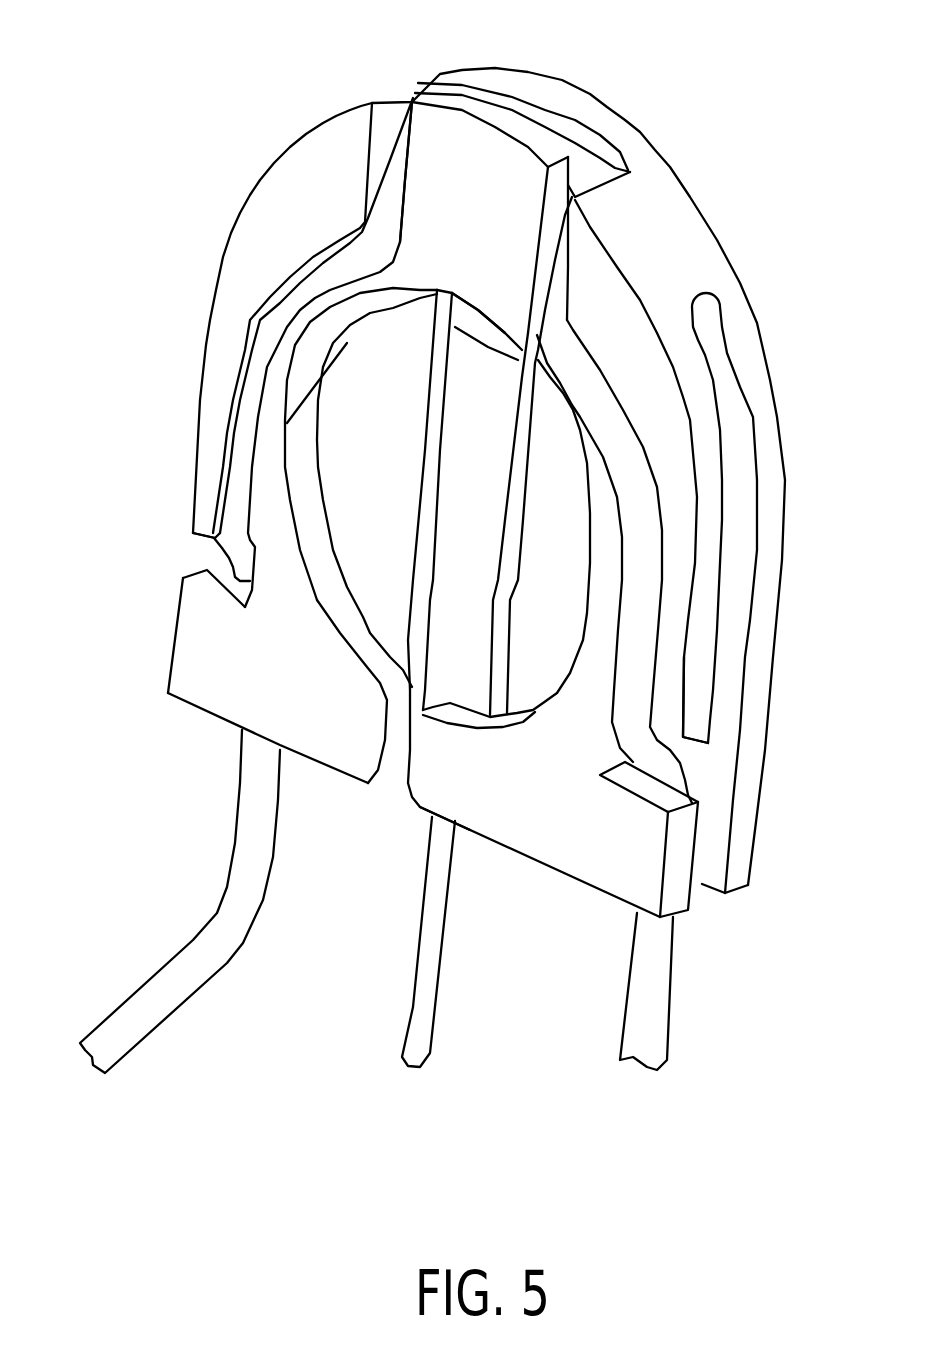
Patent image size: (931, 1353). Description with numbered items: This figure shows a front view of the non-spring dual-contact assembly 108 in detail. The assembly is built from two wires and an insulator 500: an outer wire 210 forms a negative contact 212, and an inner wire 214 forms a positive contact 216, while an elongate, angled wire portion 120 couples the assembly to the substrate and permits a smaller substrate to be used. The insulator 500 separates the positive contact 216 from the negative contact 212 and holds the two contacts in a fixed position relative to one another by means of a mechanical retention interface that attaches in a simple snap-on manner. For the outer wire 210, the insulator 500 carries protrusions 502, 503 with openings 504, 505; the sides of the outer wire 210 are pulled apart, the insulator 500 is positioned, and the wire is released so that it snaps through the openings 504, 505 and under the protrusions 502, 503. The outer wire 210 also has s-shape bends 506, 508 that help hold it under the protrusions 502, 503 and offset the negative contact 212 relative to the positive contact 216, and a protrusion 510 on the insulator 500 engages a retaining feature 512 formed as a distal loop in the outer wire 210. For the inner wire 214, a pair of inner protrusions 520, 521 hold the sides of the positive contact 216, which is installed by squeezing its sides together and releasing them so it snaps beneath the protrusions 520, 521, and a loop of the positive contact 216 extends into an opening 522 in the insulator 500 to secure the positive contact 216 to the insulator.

The non-spring dual-contact assembly 108 is at (765, 186).
The insulator 500 is at (658, 188).
The protrusion 510 is at (468, 107).
The retaining feature 512 is at (576, 150).
The negative contact 212 is at (256, 350).
The positive contact 216 is at (430, 487).
The opening 522 is at (469, 330).
The opening 505 is at (180, 543).
The s-shape bend 508 is at (232, 550).
The protrusion 503 is at (187, 598).
The s-shape bend 506 is at (642, 748).
The opening 504 is at (700, 768).
The protrusion 502 is at (652, 862).
The inner protrusion 520 is at (313, 748).
The inner protrusion 521 is at (425, 794).
The inner wire 214 is at (460, 913).
The outer wire 210 is at (686, 998).
The elongate, angled wire portion 120 is at (163, 1040).